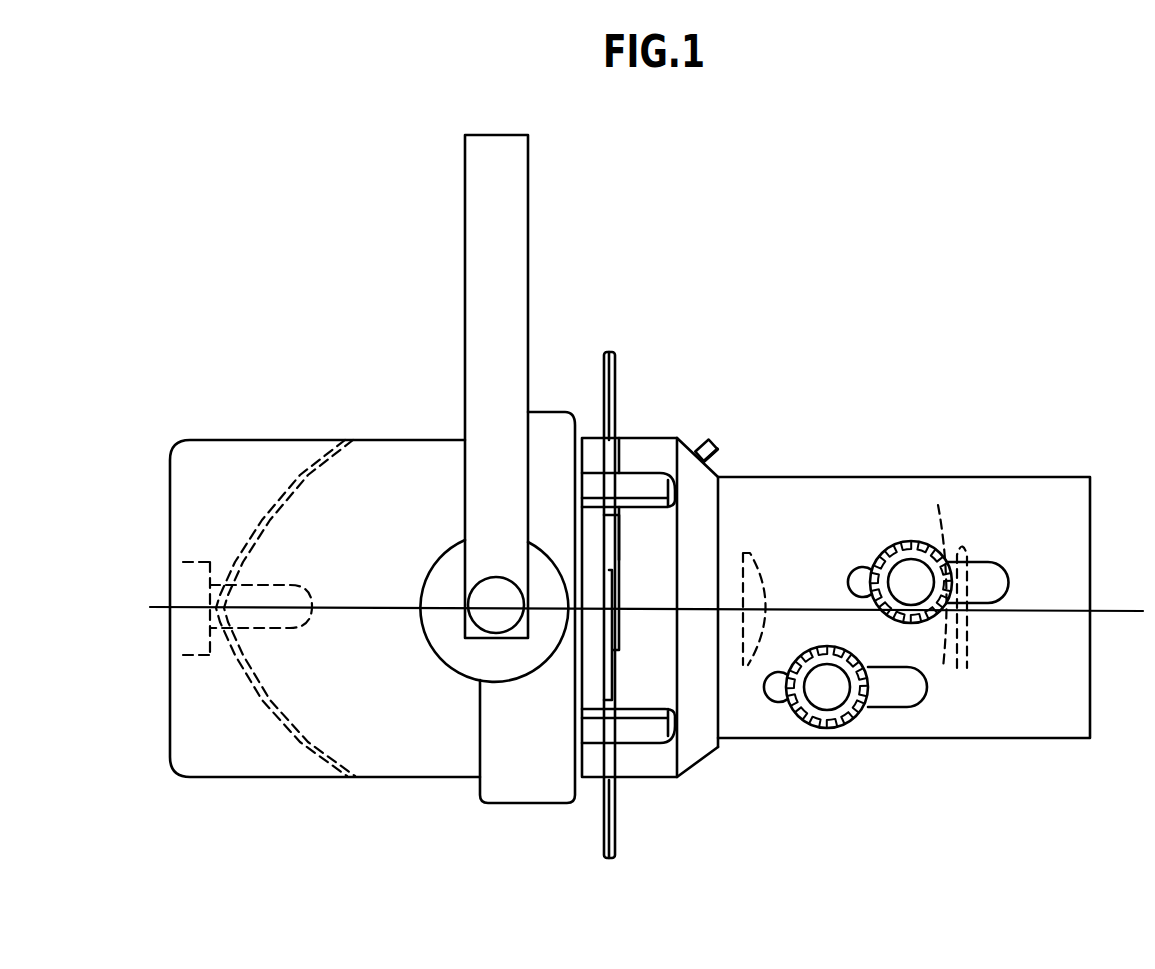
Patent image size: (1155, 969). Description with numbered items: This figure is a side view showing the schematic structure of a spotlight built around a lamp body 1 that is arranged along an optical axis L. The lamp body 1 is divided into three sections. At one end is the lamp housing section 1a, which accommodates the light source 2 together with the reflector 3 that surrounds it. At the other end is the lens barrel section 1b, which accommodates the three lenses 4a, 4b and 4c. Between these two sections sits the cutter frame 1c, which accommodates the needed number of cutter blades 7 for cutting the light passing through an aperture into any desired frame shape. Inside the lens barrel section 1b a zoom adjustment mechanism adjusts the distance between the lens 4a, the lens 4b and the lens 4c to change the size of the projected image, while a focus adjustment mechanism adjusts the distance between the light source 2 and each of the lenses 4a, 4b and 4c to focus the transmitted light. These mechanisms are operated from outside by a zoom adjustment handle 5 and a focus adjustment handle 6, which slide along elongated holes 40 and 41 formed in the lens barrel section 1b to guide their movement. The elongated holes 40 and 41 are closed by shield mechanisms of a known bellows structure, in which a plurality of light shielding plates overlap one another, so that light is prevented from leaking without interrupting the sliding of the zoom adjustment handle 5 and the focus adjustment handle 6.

The lamp body 1 is at (372, 436).
The lamp housing section 1a is at (246, 440).
The lens barrel section 1b is at (1068, 478).
The cutter frame 1c is at (651, 438).
The light source 2 is at (288, 617).
The reflector 3 is at (268, 700).
The lens 4a is at (752, 590).
The lens 4b is at (939, 575).
The lens 4c is at (965, 542).
The zoom adjustment handle 5 is at (838, 727).
The focus adjustment handle 6 is at (882, 556).
The cutter blade 7 is at (619, 690).
The elongated hole 40 is at (898, 695).
The elongated hole 41 is at (995, 590).
The optical axis L is at (1108, 610).